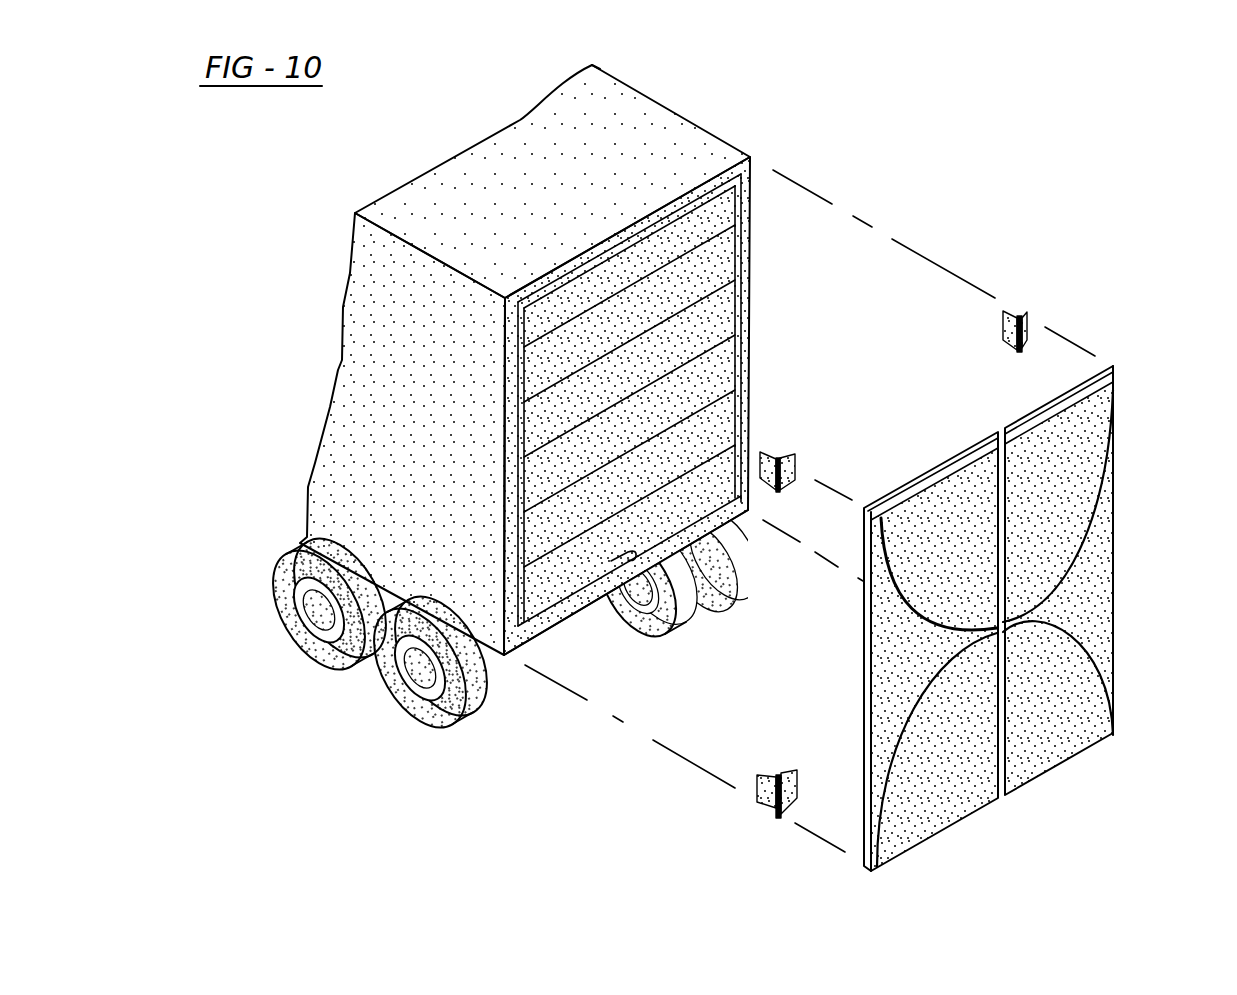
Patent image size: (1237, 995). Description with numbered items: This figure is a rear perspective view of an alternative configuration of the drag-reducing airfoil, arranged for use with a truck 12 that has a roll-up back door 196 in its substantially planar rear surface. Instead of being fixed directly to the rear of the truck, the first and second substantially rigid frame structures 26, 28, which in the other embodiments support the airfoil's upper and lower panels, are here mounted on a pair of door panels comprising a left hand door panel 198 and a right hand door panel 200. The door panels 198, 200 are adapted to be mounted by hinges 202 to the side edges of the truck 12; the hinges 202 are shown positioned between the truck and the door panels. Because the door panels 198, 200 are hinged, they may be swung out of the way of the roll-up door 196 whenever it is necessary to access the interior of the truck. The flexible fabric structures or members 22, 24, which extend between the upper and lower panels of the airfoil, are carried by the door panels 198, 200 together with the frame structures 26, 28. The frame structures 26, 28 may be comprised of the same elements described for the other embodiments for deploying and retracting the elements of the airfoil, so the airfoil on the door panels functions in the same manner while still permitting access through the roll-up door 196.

The truck 12 is at (716, 146).
The roll-up back door 196 is at (718, 328).
The left hand door panel 198 is at (978, 442).
The right hand door panel 200 is at (1097, 368).
The hinges 202 is at (779, 456).
The flexible fabric member 22 is at (878, 683).
The flexible fabric member 24 is at (1095, 590).
The first frame structure 26 is at (1128, 424).
The second frame structure 28 is at (1125, 702).